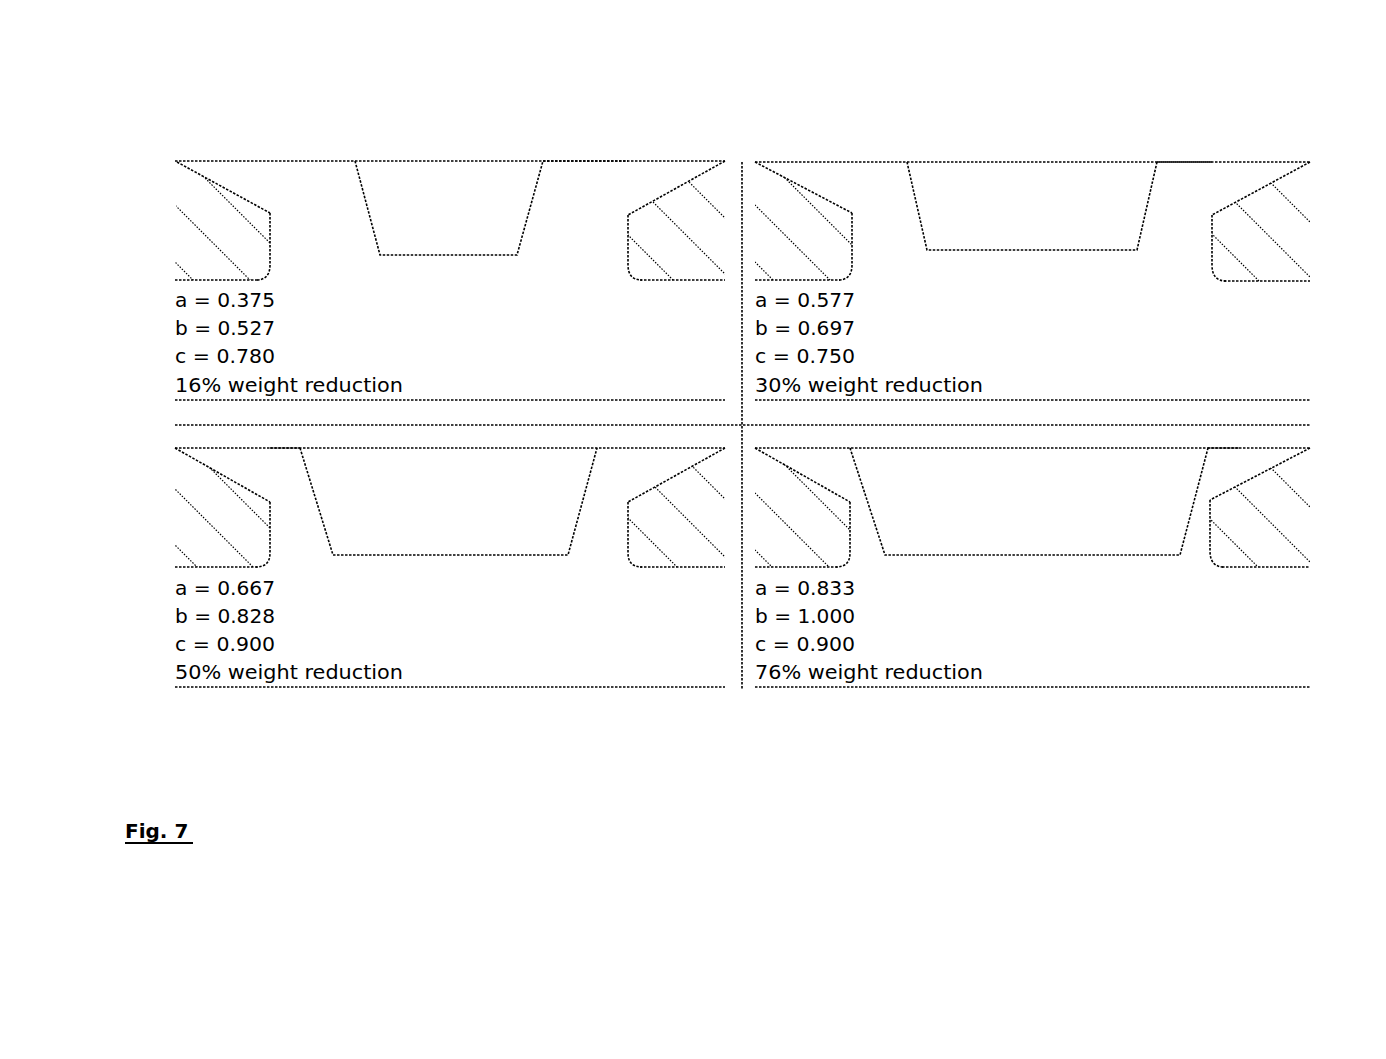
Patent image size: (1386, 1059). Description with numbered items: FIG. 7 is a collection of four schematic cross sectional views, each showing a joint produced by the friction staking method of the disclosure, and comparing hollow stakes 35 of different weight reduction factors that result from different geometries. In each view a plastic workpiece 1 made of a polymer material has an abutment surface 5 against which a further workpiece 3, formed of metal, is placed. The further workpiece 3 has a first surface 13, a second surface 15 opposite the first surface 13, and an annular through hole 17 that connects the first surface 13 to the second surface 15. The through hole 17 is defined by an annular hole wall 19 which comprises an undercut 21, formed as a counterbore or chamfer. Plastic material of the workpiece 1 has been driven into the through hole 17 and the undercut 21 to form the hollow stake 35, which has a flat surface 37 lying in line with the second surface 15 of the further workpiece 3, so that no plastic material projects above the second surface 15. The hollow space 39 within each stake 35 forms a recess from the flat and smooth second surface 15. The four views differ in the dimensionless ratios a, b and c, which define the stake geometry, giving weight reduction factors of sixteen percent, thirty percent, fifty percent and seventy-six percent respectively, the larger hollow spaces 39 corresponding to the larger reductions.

The plastic workpiece 1 is at (449, 349).
The further workpiece 3 is at (195, 222).
The abutment surface 5 is at (703, 282).
The first surface 13 is at (218, 280).
The second surface 15 is at (760, 752).
The through hole 17 is at (270, 252).
The hole wall 19 is at (628, 235).
The undercut 21 is at (672, 185).
The hollow stake 35 is at (593, 205).
The flat surface 37 is at (570, 160).
The hollow space 39 is at (438, 222).